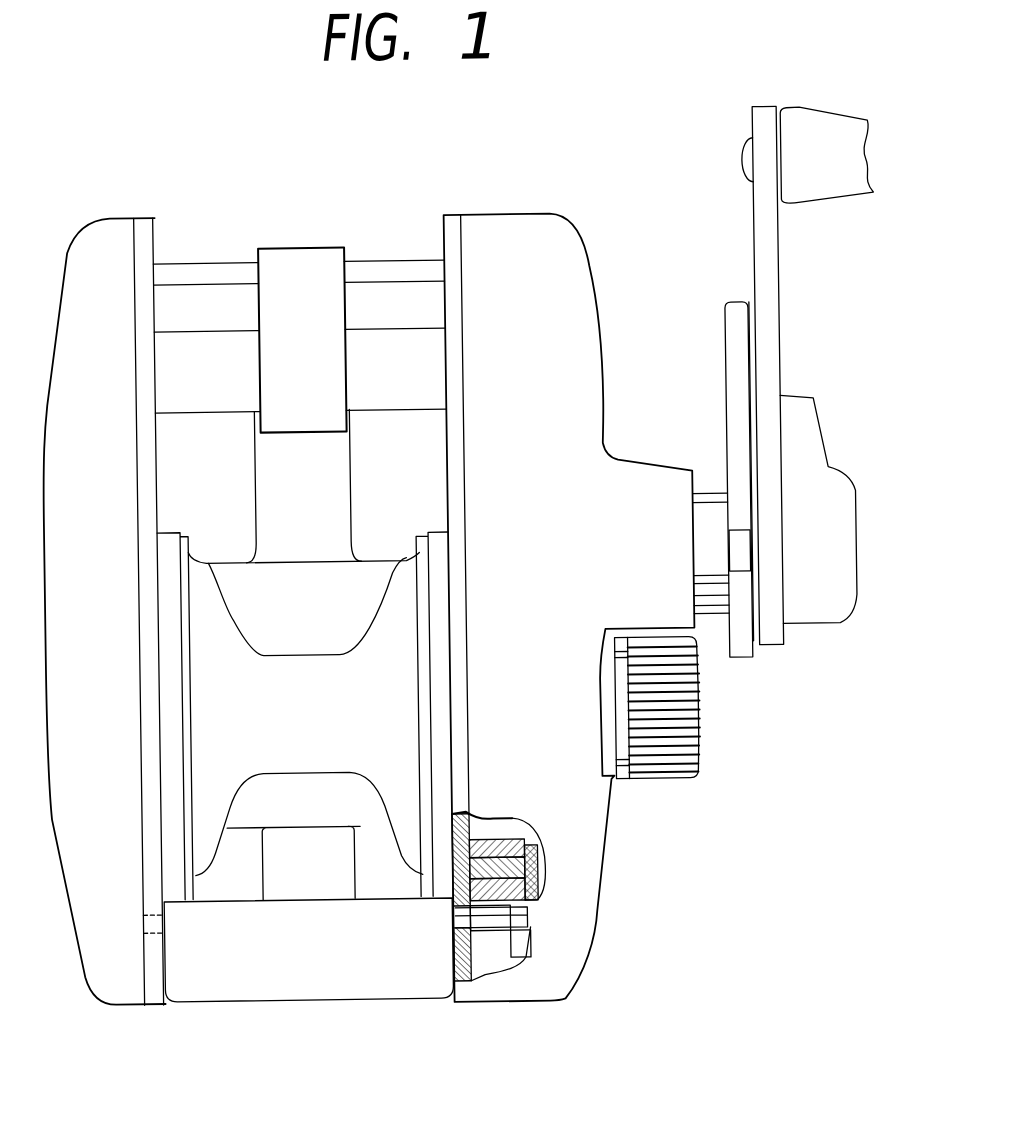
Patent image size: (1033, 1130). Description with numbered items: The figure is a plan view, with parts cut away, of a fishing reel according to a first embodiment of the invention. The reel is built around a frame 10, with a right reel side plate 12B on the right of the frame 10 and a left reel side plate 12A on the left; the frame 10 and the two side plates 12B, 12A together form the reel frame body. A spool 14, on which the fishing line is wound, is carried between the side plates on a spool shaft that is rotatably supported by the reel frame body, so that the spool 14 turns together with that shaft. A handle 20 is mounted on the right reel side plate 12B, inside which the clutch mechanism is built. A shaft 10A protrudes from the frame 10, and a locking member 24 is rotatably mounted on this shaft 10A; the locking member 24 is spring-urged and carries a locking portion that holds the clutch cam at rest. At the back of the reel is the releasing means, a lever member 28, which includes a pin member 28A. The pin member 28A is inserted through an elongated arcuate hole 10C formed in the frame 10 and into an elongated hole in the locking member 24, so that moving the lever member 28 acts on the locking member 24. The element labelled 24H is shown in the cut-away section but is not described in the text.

The frame 10 is at (453, 230).
The shaft 10A is at (487, 834).
The elongated arcuate hole 10C is at (469, 917).
The left reel side plate 12A is at (112, 245).
The right reel side plate 12B is at (522, 228).
The spool 14 is at (392, 639).
The handle 20 is at (775, 257).
The locking member 24 is at (514, 824).
The hole in bearing housing 24H is at (525, 934).
The lever member 28 is at (263, 975).
The pin member 28A is at (526, 919).